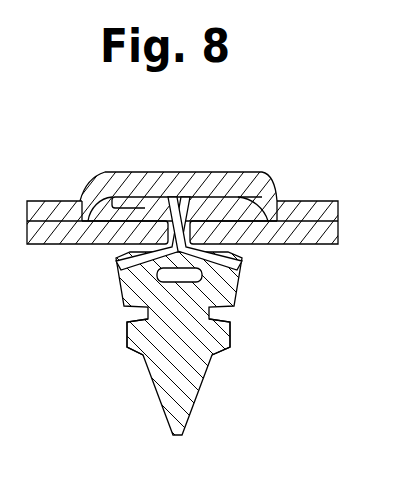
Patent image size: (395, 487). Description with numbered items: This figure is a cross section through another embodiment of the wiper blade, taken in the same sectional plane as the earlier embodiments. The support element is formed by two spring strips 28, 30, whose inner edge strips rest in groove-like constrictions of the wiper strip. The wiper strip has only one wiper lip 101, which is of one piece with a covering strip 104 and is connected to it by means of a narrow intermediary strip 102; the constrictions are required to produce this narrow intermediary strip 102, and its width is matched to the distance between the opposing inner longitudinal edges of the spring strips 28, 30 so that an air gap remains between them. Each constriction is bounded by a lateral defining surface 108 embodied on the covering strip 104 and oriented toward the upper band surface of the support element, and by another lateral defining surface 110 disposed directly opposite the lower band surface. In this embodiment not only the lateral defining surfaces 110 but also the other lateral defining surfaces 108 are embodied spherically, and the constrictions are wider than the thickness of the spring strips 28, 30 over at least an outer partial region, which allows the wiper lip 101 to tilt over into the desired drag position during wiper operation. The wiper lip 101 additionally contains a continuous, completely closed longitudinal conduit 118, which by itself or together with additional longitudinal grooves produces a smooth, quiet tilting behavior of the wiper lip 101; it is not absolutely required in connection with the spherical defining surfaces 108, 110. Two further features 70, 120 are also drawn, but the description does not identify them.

The spring strip 28 is at (45, 245).
The spring strip 30 is at (302, 246).
The clip 70 is at (181, 149).
The wiper lip 101 is at (197, 344).
The intermediary strip 102 is at (155, 185).
The covering strip 104 is at (203, 176).
The lateral defining surface 108 is at (82, 216).
The lateral defining surface 110 is at (125, 250).
The longitudinal conduit 118 is at (204, 280).
The barbs 120 is at (127, 338).